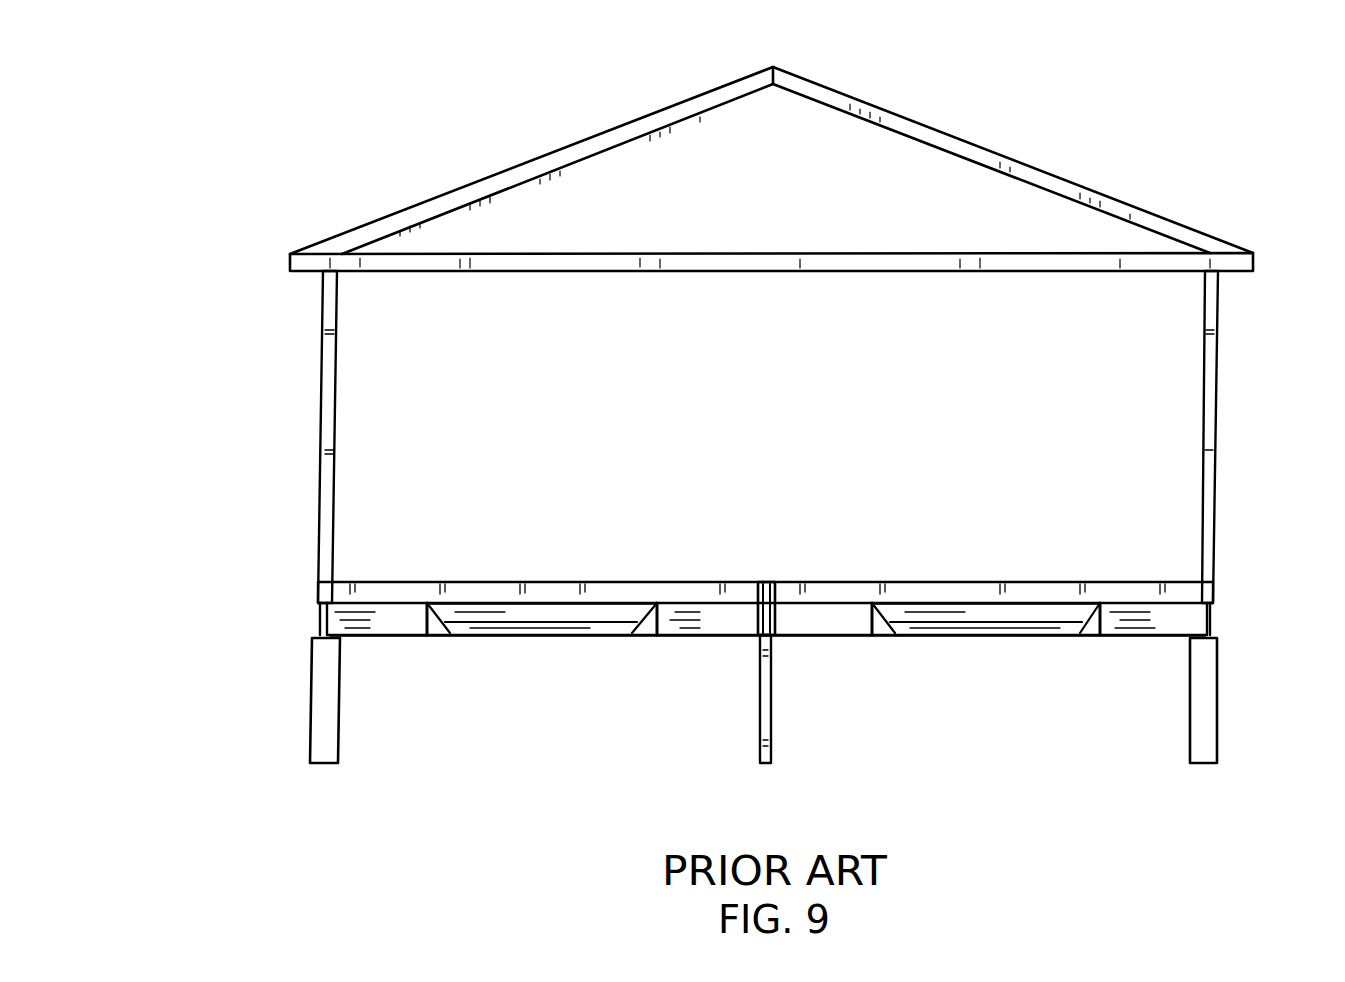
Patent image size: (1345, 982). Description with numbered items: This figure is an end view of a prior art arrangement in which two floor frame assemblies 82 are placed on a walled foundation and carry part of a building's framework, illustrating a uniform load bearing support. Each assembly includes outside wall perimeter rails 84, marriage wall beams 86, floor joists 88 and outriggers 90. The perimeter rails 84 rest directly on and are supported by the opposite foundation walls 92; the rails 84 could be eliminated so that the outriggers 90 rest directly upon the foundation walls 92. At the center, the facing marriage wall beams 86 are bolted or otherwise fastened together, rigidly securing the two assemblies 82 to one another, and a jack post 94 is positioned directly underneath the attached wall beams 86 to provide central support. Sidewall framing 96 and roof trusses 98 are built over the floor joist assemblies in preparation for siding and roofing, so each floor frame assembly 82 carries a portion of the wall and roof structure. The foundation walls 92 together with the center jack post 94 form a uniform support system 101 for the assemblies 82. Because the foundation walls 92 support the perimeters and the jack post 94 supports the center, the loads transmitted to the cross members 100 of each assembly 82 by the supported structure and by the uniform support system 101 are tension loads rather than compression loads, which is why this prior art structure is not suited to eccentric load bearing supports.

The floor frame assembly 82 is at (483, 648).
The outside wall perimeter rail 84 is at (318, 635).
The marriage wall beam 86 is at (742, 610).
The floor joist 88 is at (597, 583).
The outrigger 90 is at (363, 638).
The foundation wall 92 is at (312, 700).
The jack post 94 is at (757, 727).
The sidewall framing 96 is at (326, 428).
The roof truss 98 is at (943, 130).
The cross member 100 is at (592, 625).
The uniform support system 101 is at (465, 753).